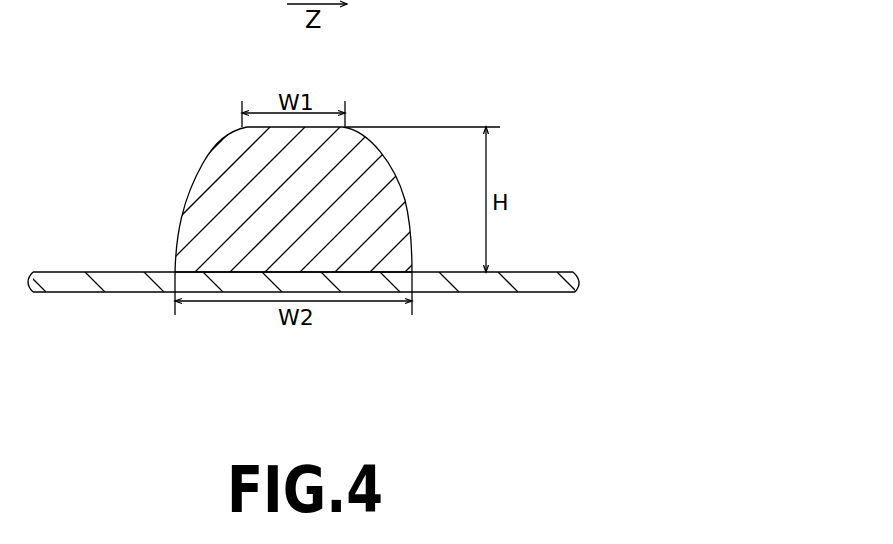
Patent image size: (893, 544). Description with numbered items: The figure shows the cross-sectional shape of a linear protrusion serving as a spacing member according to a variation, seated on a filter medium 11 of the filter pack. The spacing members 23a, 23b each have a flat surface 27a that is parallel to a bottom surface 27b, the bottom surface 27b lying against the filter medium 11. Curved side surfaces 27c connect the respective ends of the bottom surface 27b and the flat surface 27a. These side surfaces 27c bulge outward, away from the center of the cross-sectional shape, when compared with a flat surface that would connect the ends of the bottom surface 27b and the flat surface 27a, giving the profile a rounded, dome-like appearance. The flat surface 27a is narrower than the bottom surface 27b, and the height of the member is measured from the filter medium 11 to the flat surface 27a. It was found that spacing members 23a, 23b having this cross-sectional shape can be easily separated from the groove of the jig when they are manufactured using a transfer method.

The filter medium 11 is at (452, 270).
The spacing member 23a is at (321, 192).
The spacing member 23b is at (320, 209).
The flat surface 27a is at (248, 123).
The bottom surface 27b is at (217, 274).
The side surfaces 27c is at (183, 192).